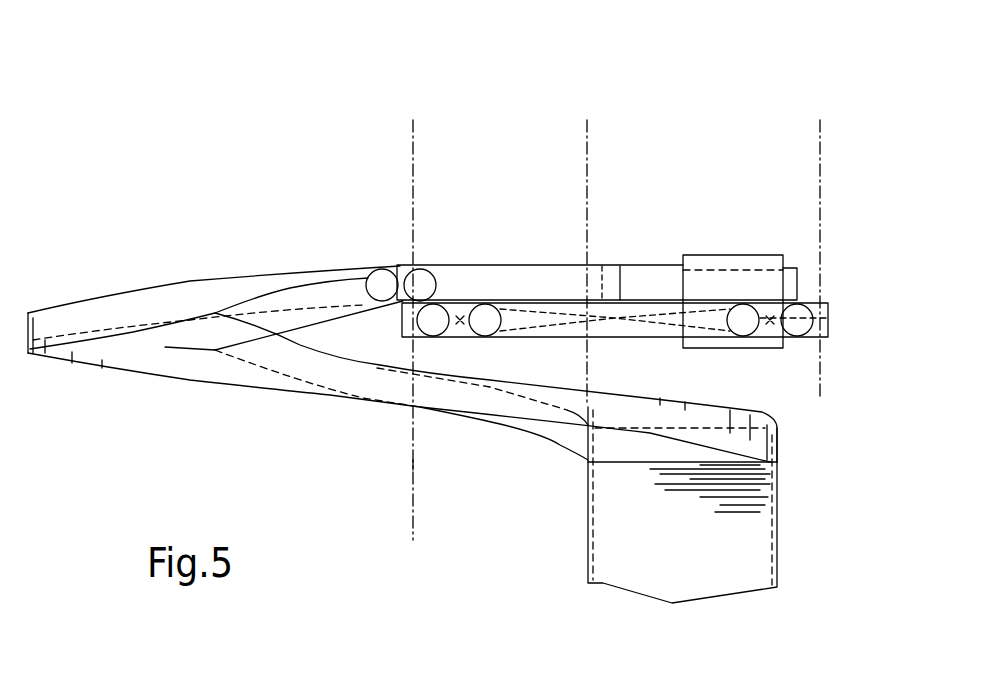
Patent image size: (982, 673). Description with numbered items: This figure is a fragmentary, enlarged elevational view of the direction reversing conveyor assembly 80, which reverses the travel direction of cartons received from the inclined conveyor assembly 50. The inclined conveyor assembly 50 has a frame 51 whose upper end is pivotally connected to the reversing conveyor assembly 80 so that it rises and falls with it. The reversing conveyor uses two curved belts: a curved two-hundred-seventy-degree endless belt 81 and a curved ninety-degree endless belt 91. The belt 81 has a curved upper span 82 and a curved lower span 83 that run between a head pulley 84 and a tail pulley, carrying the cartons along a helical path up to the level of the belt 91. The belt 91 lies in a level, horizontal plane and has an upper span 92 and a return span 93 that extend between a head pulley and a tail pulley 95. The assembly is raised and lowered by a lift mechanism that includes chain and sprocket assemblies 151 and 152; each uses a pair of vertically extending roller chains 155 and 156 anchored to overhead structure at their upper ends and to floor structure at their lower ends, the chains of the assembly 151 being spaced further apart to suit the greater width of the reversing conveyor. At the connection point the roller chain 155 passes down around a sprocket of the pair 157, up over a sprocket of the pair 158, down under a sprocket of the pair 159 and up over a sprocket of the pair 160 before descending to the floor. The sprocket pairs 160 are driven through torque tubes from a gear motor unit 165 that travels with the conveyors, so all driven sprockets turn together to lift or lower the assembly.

The inclined conveyor assembly 50 is at (577, 558).
The frame 51 is at (760, 533).
The direction reversing conveyor assembly 80 is at (240, 186).
The curved 270° endless belt 81 is at (190, 281).
The curved upper span 82 is at (133, 332).
The curved lower span 83 is at (152, 380).
The head pulley 84 is at (356, 276).
The curved 90° endless belt 91 is at (566, 264).
The upper span 92 is at (460, 265).
The return span 93 is at (598, 266).
The tail pulley 95 is at (435, 265).
The chain and sprocket assembly 151 is at (392, 500).
The chain and sprocket assembly 152 is at (606, 138).
The roller chain 155 is at (410, 168).
The roller chain 156 is at (820, 175).
The sprockets 157 is at (430, 316).
The sprockets 158 is at (487, 326).
The sprockets 159 is at (745, 330).
The sprockets 160 is at (827, 320).
The gear motor unit 165 is at (728, 255).